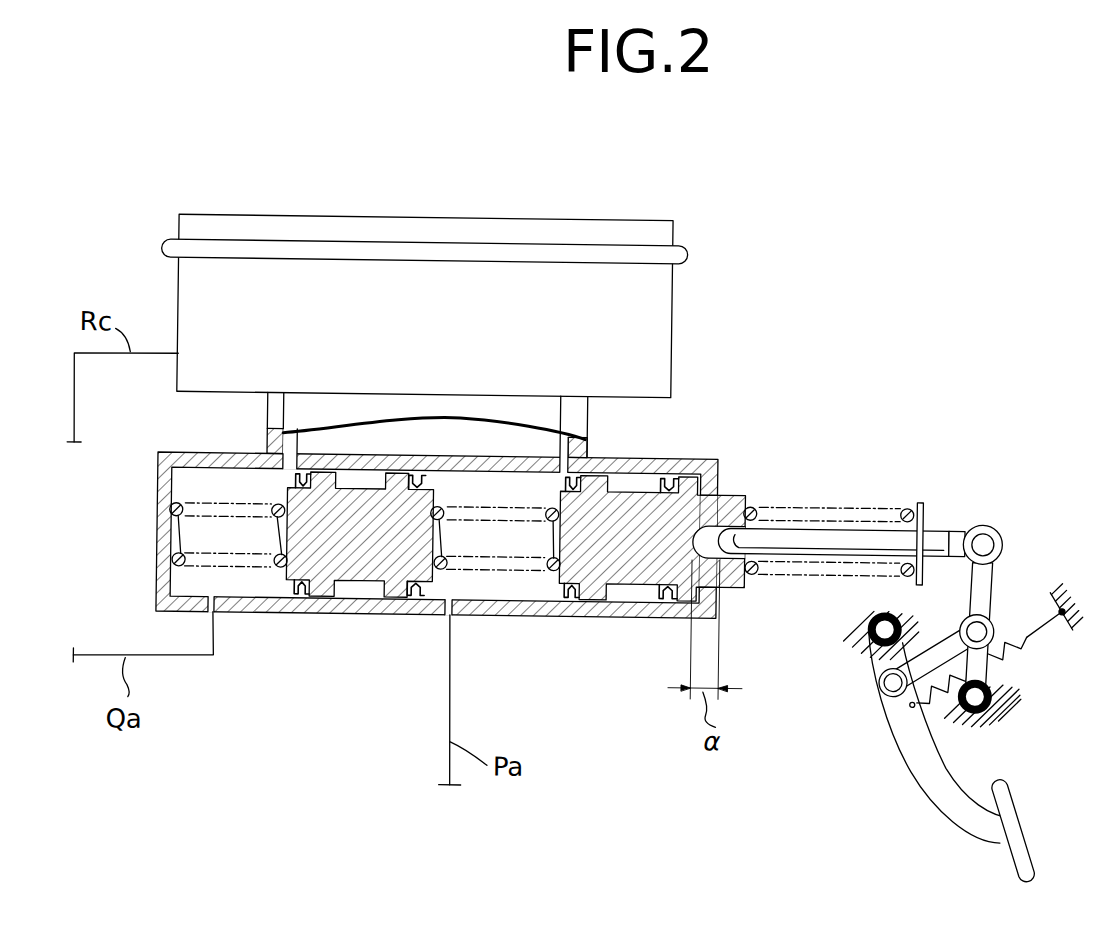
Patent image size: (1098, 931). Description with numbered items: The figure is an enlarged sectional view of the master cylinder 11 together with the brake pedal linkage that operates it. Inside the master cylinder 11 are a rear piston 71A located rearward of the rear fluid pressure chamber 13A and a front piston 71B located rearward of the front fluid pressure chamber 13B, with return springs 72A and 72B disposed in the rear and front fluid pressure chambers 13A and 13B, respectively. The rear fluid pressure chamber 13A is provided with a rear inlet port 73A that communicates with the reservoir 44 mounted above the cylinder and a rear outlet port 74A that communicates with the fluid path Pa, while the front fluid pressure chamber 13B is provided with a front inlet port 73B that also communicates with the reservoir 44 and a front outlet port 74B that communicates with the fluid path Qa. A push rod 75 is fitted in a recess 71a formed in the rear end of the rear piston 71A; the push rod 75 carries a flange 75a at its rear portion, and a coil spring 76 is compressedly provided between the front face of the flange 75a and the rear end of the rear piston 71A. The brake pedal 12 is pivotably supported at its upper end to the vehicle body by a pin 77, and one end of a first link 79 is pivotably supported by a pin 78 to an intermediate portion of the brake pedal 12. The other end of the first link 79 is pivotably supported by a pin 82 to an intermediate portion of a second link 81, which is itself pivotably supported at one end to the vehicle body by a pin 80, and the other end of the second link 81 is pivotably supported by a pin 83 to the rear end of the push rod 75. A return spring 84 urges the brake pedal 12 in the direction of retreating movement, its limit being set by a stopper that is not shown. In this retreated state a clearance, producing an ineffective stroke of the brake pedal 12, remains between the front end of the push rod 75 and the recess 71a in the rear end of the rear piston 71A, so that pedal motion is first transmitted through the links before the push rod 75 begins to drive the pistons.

The reservoir 44 is at (433, 276).
The master cylinder 11 is at (727, 390).
The front inlet port 73B is at (293, 461).
The rear inlet port 73A is at (565, 434).
The front fluid pressure chamber 13B is at (258, 547).
The rear fluid pressure chamber 13A is at (520, 549).
The front piston 71B is at (369, 570).
The rear piston 71A is at (637, 571).
The return spring 72B is at (284, 566).
The return spring 72A is at (558, 563).
The front outlet port 74B is at (212, 614).
The rear outlet port 74A is at (449, 609).
The recess 71a is at (713, 520).
The push rod 75 is at (824, 553).
The flange 75a is at (923, 493).
The coil spring 76 is at (759, 565).
The pin 83 is at (1003, 534).
The second link 81 is at (980, 574).
The pin 82 is at (970, 612).
The first link 79 is at (945, 640).
The pin 80 is at (993, 699).
The pin 77 is at (872, 625).
The pin 78 is at (896, 677).
The return spring 84 is at (1023, 637).
The brake pedal 12 is at (1025, 814).